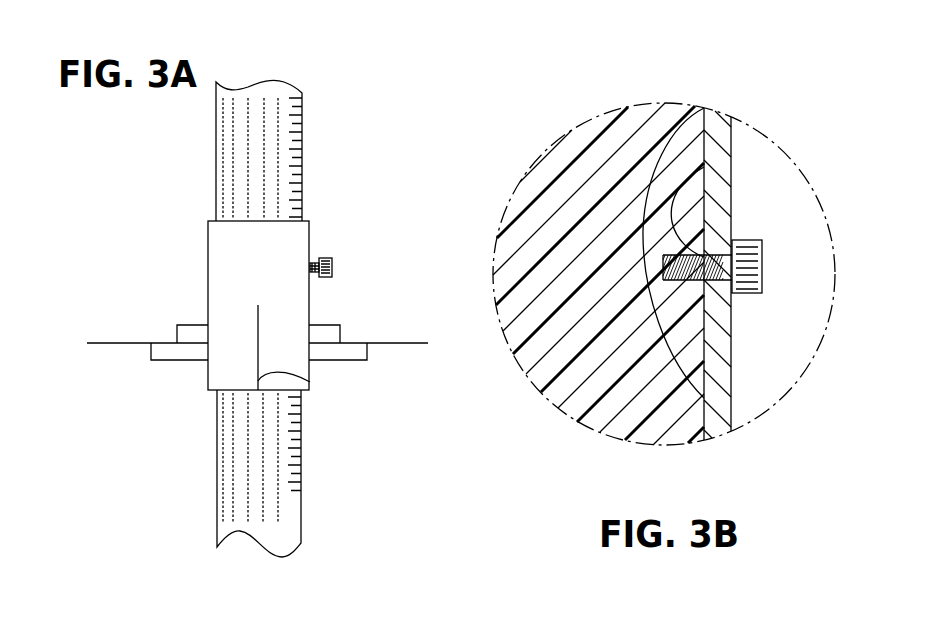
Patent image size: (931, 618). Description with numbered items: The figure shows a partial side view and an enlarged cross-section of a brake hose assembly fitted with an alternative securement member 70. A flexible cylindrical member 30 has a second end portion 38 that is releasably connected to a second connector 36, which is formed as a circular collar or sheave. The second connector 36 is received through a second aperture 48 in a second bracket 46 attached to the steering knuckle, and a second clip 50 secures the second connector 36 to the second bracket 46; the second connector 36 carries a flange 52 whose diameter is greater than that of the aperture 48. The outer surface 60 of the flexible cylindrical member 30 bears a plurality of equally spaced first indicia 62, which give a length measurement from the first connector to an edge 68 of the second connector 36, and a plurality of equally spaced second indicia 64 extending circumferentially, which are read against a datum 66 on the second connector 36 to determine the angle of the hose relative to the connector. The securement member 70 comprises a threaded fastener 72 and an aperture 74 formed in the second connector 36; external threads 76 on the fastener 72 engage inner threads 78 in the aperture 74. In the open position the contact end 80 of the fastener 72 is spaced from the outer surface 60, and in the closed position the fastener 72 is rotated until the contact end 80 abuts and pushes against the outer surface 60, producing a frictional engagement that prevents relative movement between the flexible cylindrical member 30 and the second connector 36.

In FIG. 3A, the flexible cylindrical member 30 is at (270, 80).
In FIG. 3B, the flexible cylindrical member 30 is at (658, 420).
In FIG. 3A, the second connector 36 is at (145, 285).
In FIG. 3A, the second end portion 38 is at (205, 192).
In FIG. 3A, the second bracket 46 is at (390, 342).
In FIG. 3A, the second aperture 48 is at (212, 345).
In FIG. 3A, the second clip 50 is at (368, 348).
In FIG. 3A, the flange 52 is at (328, 324).
In FIG. 3A, the outer surface 60 is at (294, 548).
In FIG. 3B, the outer surface 60 is at (672, 342).
In FIG. 3A, the plurality of equally spaced first indicia 62 is at (290, 488).
In FIG. 3A, the plurality of equally spaced second indicia 64 is at (278, 510).
In FIG. 3A, the datum 66 is at (310, 382).
In FIG. 3A, the edge 68 is at (227, 393).
In FIG. 3A, the securement member 70 is at (378, 234).
In FIG. 3A, the threaded fastener 72 is at (333, 268).
In FIG. 3B, the threaded fastener 72 is at (763, 268).
In FIG. 3B, the aperture 74 is at (732, 205).
In FIG. 3A, the external threads 76 is at (313, 265).
In FIG. 3B, the external threads 76 is at (732, 152).
In FIG. 3B, the inner threads 78 is at (704, 288).
In FIG. 3B, the contact end 80 is at (704, 112).